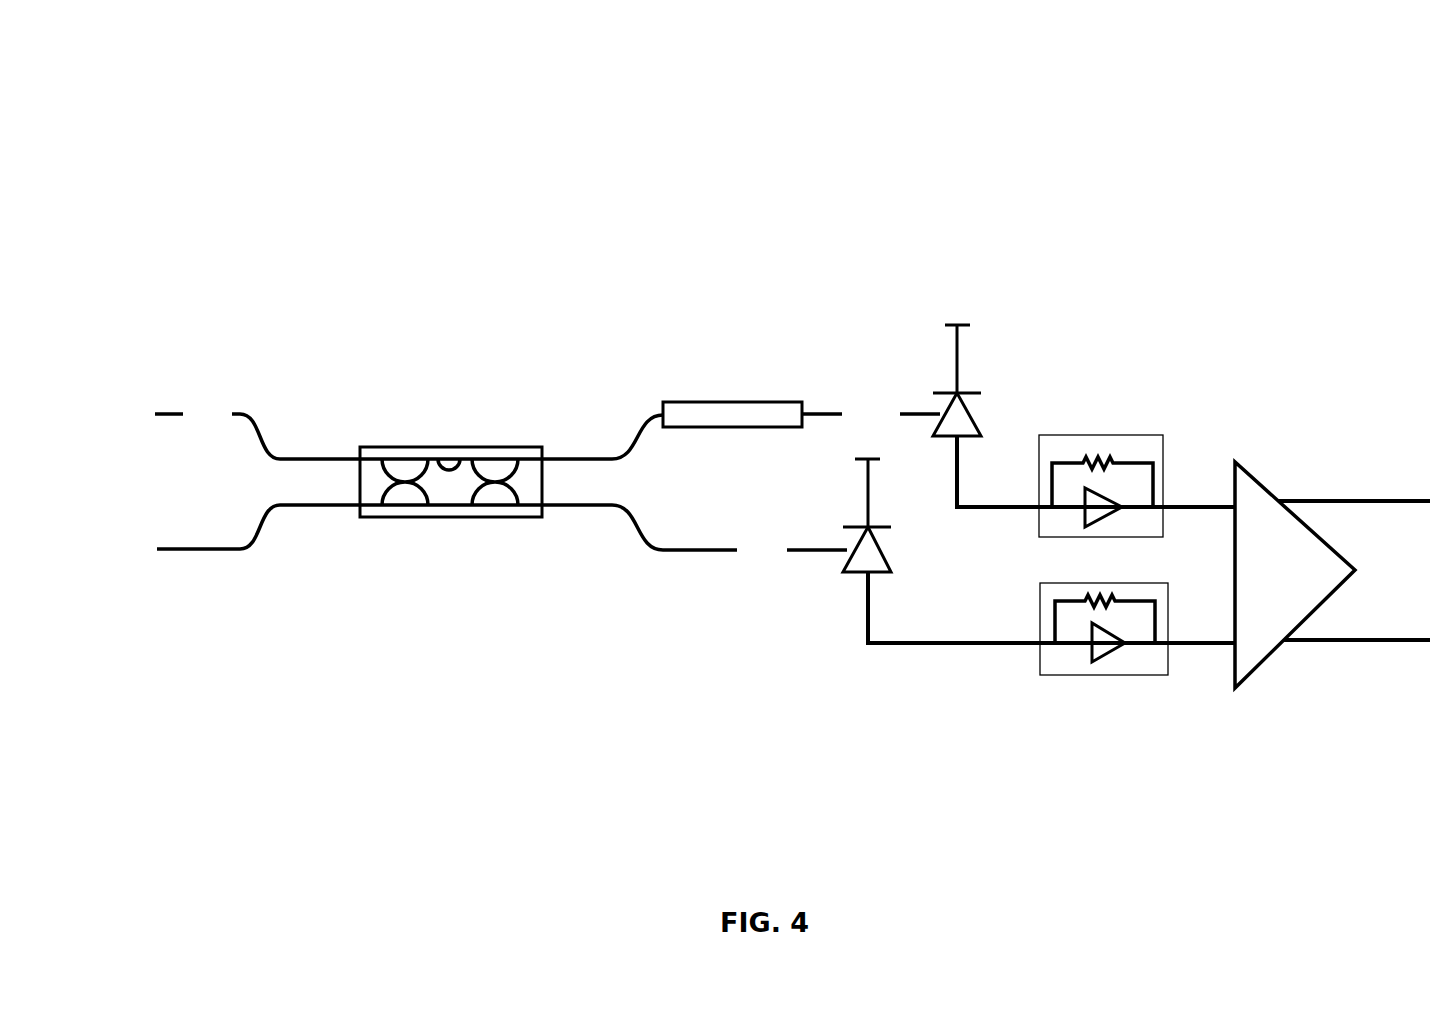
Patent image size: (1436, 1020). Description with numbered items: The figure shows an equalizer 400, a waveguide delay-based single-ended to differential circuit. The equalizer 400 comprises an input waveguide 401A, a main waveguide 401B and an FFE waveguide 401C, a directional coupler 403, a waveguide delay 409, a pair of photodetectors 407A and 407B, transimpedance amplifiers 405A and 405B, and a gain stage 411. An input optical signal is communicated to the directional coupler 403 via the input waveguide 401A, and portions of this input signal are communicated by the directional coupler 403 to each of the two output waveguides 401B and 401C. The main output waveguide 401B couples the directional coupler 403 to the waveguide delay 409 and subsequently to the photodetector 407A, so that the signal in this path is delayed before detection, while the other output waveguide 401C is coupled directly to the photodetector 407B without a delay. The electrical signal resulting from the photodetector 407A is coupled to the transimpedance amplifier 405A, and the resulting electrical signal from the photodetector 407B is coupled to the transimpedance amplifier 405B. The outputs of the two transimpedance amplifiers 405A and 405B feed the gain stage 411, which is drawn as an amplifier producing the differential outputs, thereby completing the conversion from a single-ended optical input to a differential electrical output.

The equalizer 400 is at (380, 96).
The input waveguide 401A is at (172, 414).
The main waveguide 401B is at (572, 452).
The FFE waveguide 401C is at (682, 553).
The directional coupler 403 is at (463, 447).
The transimpedance amplifier 405A is at (1130, 435).
The transimpedance amplifier 405B is at (1065, 676).
The photodetector 407A is at (982, 428).
The photodetector 407B is at (847, 576).
The waveguide delay 409 is at (700, 402).
The gain stage 411 is at (1250, 466).